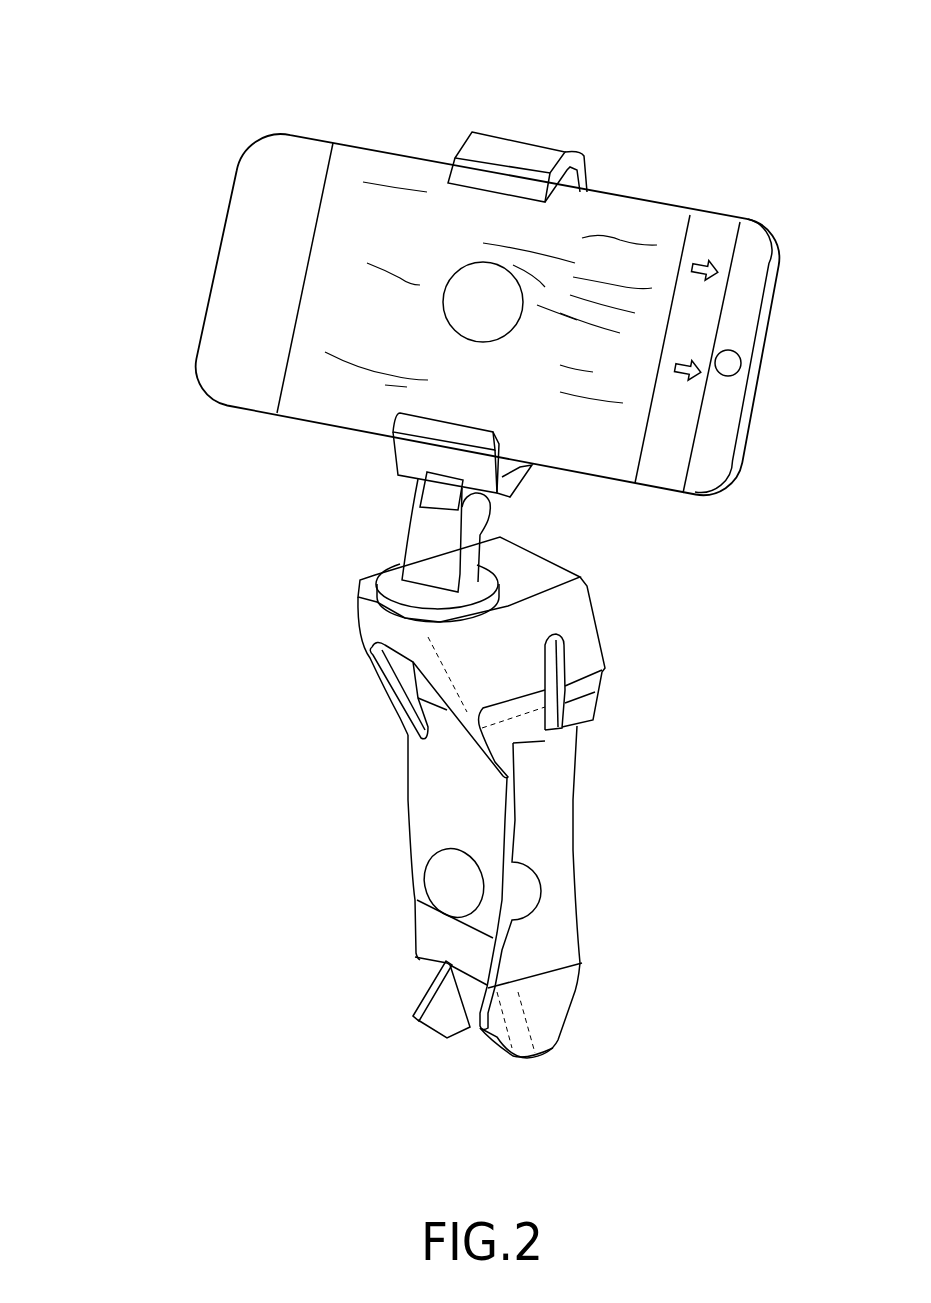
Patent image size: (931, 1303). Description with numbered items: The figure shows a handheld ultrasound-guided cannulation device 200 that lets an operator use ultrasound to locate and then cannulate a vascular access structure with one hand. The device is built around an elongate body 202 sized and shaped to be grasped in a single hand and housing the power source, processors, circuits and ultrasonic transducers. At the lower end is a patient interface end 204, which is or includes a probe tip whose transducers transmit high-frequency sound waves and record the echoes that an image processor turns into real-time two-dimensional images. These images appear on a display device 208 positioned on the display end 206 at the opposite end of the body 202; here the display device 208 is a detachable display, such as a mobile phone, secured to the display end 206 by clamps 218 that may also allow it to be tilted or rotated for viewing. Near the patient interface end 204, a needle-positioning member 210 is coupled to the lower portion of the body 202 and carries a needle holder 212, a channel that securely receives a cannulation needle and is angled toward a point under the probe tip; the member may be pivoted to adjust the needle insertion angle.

The ultrasound-guided cannulation device 200 is at (131, 66).
The elongate body 202 is at (552, 853).
The patient interface end 204 is at (537, 1072).
The display end 206 is at (597, 556).
The display device 208 is at (620, 227).
The needle-positioning member 210 is at (443, 998).
The needle holder 212 is at (408, 1036).
The clamp 218 is at (500, 180).